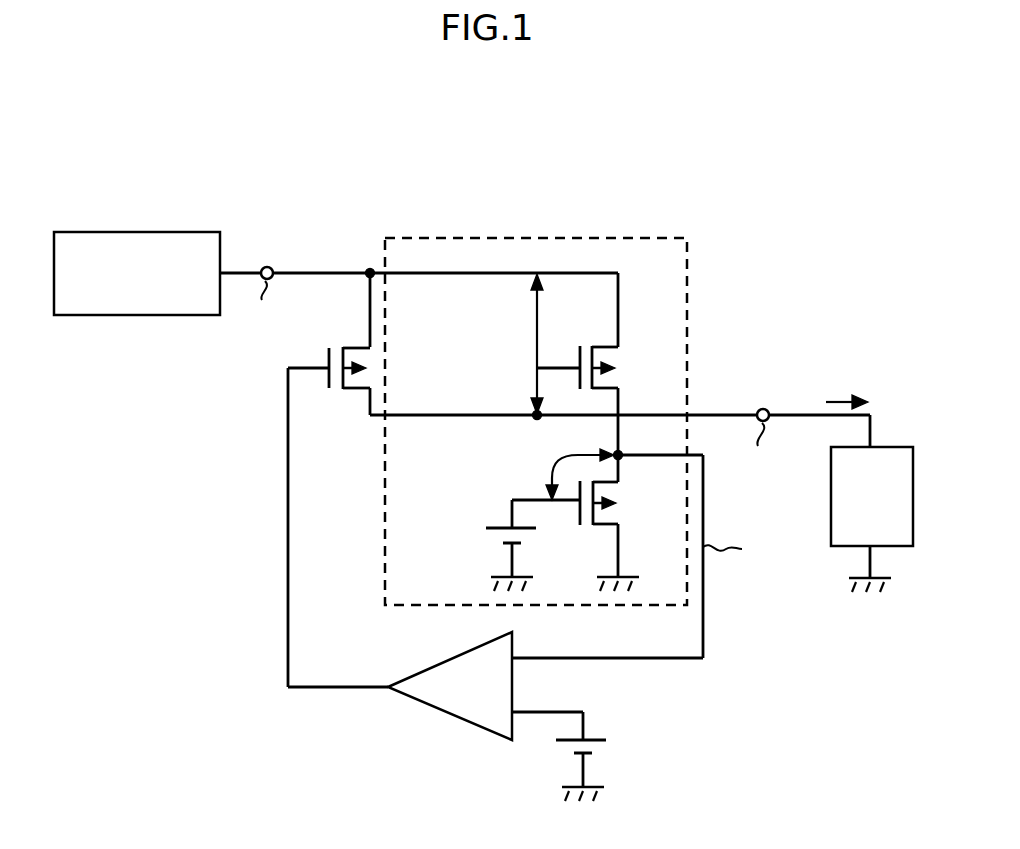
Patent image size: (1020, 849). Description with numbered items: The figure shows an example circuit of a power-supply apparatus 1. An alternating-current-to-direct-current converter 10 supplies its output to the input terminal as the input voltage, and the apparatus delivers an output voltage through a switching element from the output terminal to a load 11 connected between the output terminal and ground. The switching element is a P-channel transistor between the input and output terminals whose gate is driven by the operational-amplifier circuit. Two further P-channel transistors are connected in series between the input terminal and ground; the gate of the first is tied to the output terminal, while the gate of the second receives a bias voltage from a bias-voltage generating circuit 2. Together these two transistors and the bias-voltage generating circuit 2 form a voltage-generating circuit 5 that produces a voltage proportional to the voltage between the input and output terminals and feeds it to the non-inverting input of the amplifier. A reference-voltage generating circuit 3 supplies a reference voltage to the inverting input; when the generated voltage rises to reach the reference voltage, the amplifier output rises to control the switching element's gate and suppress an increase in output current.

The power-supply apparatus 1 is at (550, 170).
The voltage-generating circuit 5 is at (595, 256).
The bias-voltage generating circuit 2 is at (524, 538).
The reference-voltage generating circuit 3 is at (600, 745).
The AC-DC converter 10 is at (138, 232).
The load 11 is at (884, 447).